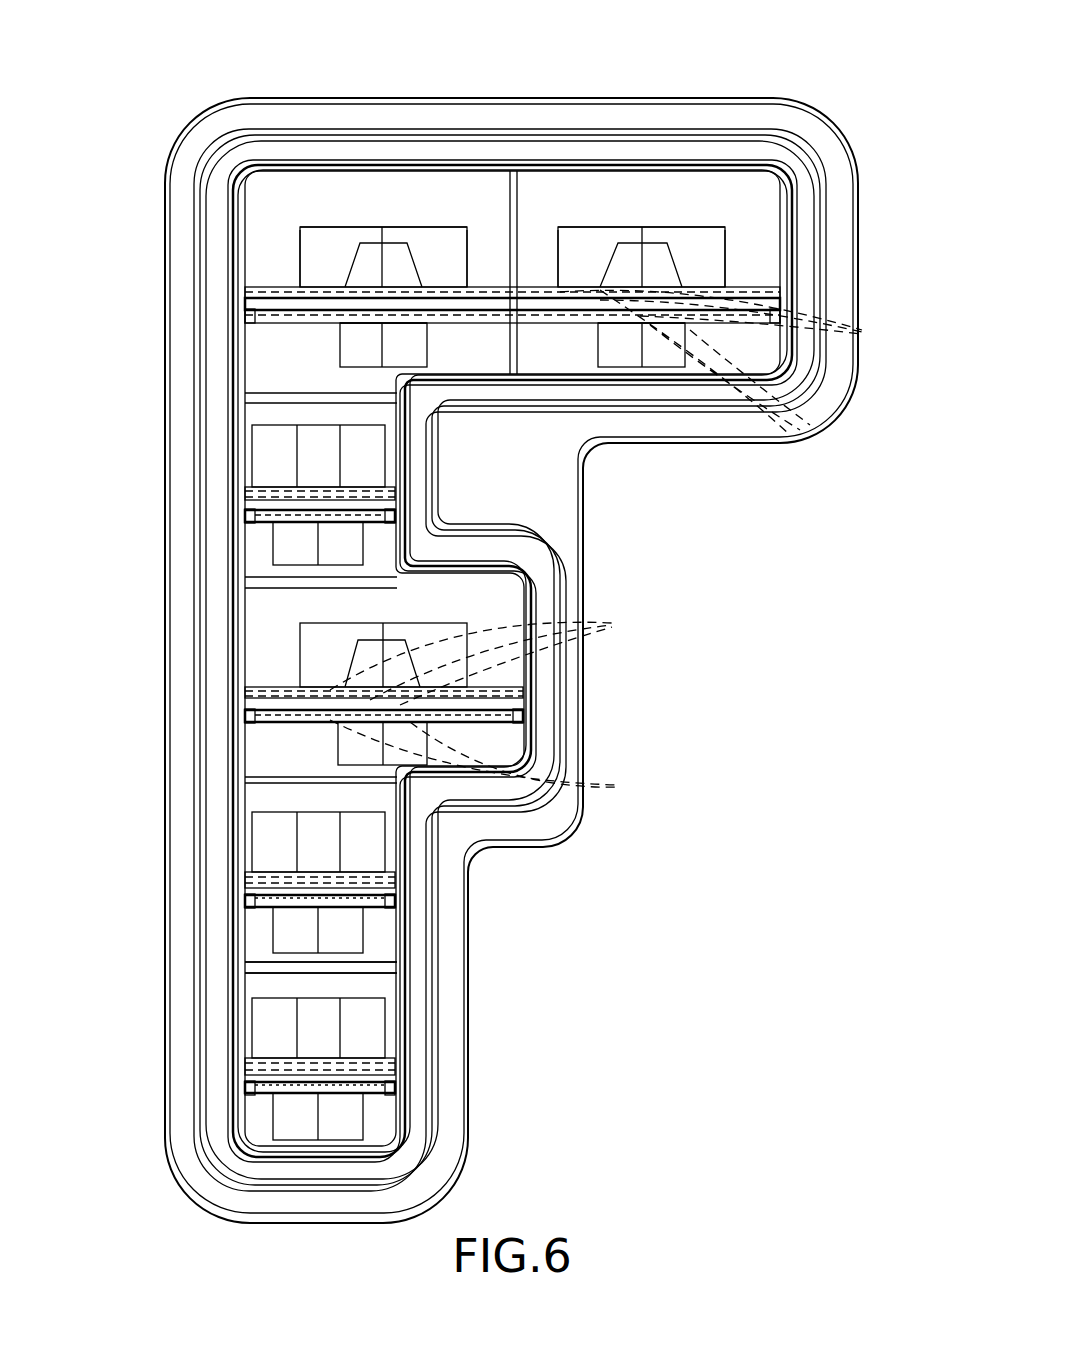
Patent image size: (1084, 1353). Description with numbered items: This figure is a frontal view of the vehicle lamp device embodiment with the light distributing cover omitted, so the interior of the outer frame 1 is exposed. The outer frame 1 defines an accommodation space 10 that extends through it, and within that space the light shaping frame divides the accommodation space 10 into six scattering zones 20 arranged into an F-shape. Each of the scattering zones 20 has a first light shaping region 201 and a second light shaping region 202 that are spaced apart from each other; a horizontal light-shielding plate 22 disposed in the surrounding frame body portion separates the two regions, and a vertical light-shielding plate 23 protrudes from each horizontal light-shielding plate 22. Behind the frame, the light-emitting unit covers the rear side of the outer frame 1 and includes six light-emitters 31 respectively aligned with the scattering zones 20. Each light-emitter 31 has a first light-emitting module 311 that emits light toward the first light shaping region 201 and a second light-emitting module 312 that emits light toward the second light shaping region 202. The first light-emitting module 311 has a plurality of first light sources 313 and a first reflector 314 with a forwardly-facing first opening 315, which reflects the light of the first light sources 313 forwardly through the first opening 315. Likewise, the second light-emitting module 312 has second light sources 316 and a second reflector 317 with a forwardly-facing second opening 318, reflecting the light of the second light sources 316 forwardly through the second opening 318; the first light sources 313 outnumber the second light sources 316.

The outer frame 1 is at (148, 133).
The accommodation space 10 is at (262, 200).
The scattering zones 20 is at (562, 886).
The first light shaping region 201 is at (262, 622).
The second light shaping region 202 is at (262, 755).
The horizontal light-shielding plates 22 is at (248, 318).
The vertical light-shielding plates 23 is at (248, 300).
The light-emitters 31 is at (620, 220).
The first light-emitting module 311 is at (298, 222).
The second light-emitting module 312 is at (355, 350).
The first light sources 313 is at (862, 331).
The first reflector 314 is at (350, 262).
The first opening 315 is at (355, 232).
The second light sources 316 is at (325, 345).
The second reflector 317 is at (365, 370).
The second opening 318 is at (360, 312).